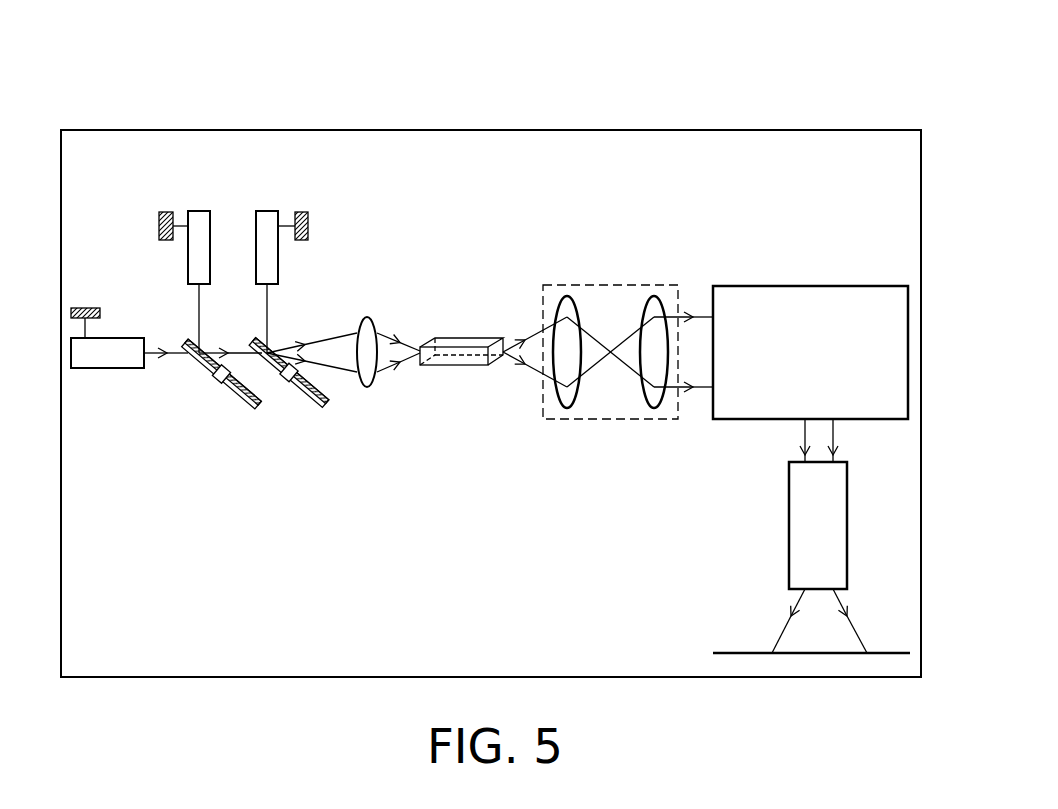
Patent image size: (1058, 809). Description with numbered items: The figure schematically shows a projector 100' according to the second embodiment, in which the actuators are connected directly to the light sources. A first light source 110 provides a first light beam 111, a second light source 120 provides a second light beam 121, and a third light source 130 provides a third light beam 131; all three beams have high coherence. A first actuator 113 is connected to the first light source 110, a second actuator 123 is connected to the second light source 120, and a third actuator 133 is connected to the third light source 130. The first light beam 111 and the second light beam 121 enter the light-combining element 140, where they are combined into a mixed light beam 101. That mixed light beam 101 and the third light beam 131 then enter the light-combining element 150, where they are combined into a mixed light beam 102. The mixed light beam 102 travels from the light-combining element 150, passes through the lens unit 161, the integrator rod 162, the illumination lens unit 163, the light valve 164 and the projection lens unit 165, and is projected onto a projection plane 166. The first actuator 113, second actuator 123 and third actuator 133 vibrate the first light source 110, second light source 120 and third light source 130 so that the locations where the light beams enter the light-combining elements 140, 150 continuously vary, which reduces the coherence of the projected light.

The projector 100' is at (491, 375).
The first light source 110 is at (95, 368).
The first light beam 111 is at (178, 356).
The first actuator 113 is at (85, 308).
The second light source 120 is at (199, 211).
The second light beam 121 is at (199, 303).
The second actuator 123 is at (159, 226).
The third light source 130 is at (267, 211).
The third light beam 131 is at (267, 303).
The third actuator 133 is at (308, 226).
The mixed light beam 101 is at (240, 348).
The mixed light beam 102 is at (342, 333).
The light-combining element 140 is at (242, 403).
The light-combining element 150 is at (312, 403).
The lens unit 161 is at (366, 388).
The integrator rod 162 is at (470, 338).
The illumination lens unit 163 is at (612, 285).
The light valve 164 is at (811, 286).
The projection lens unit 165 is at (789, 525).
The projection plane 166 is at (740, 653).